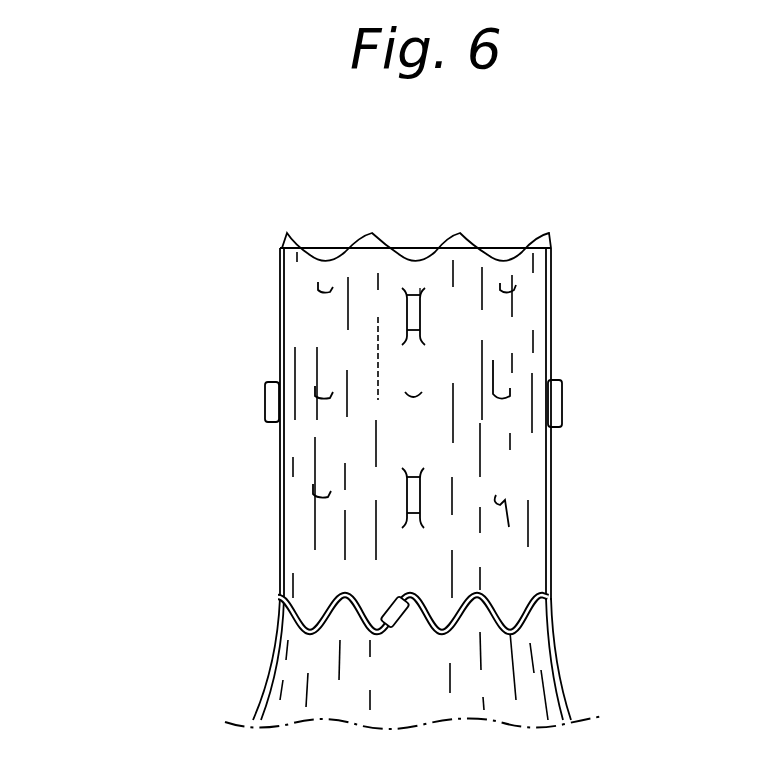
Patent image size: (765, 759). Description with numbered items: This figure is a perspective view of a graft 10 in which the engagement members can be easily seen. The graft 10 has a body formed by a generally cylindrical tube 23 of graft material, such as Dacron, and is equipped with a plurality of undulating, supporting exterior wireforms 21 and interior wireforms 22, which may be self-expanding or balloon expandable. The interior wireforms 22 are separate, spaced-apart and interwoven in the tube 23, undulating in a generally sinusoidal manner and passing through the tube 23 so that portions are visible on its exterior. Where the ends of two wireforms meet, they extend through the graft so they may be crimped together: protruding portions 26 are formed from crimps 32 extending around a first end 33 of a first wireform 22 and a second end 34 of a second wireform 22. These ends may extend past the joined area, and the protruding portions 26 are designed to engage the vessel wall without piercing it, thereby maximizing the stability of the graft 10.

The graft 10 is at (190, 663).
The exterior wireform 21 is at (266, 590).
The interior wireform 22 is at (279, 226).
The tube 23 is at (270, 495).
The protruding portion 26 is at (428, 263).
The crimp 32 is at (436, 308).
The first end 33 is at (393, 342).
The second end 34 is at (436, 338).